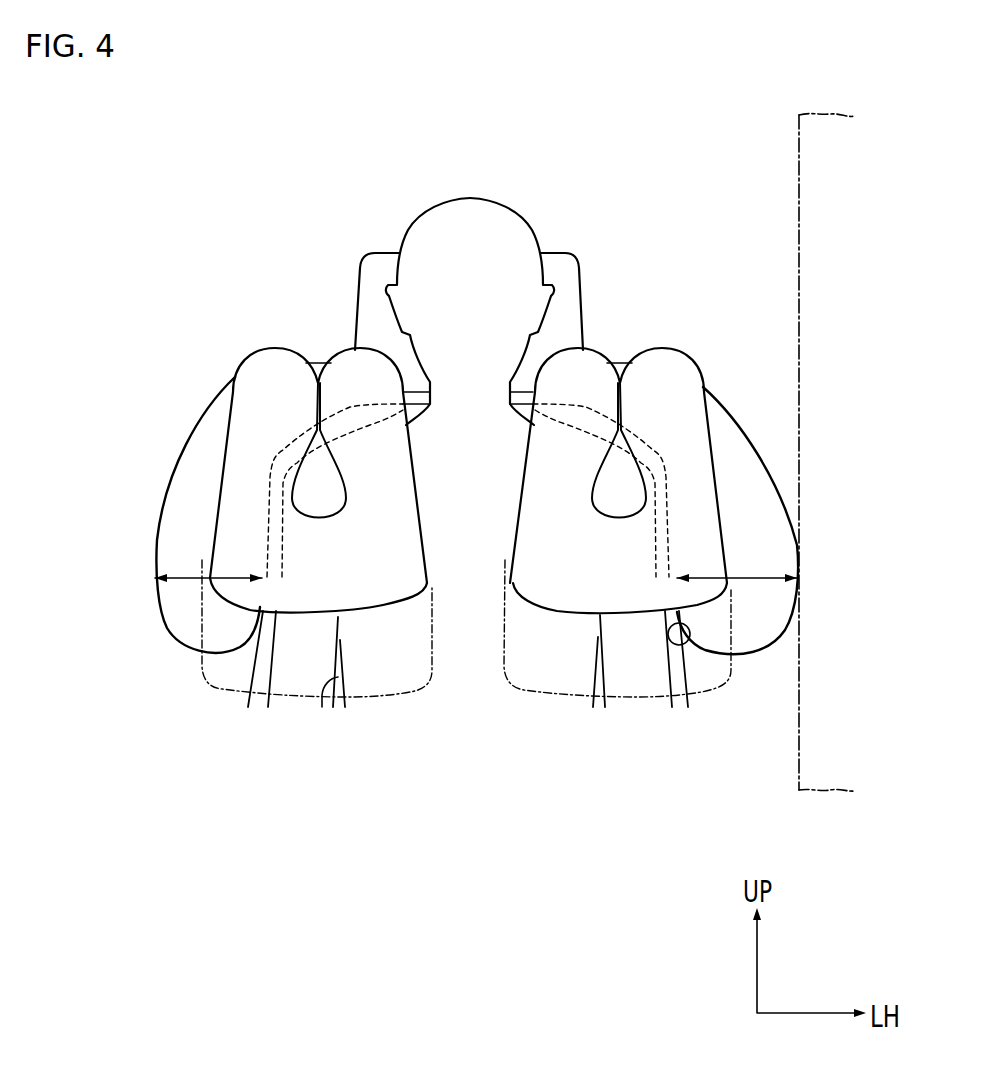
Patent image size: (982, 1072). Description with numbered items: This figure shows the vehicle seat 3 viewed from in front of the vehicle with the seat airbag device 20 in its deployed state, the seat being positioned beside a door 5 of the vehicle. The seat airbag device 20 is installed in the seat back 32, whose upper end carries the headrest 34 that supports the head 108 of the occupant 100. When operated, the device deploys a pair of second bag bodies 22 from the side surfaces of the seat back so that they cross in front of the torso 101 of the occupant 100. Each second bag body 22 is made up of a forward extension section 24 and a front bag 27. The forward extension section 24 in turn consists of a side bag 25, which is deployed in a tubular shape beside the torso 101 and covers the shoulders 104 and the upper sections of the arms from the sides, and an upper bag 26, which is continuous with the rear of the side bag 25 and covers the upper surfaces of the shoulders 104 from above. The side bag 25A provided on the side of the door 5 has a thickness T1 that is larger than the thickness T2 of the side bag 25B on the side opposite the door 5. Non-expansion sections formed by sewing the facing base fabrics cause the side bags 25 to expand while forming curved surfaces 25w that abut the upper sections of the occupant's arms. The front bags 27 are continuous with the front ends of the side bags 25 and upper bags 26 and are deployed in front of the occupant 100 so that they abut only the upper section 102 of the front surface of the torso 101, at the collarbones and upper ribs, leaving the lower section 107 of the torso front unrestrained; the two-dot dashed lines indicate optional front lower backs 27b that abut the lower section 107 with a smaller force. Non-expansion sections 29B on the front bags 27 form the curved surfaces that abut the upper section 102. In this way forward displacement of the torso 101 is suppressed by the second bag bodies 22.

The vehicle seat 3 is at (500, 265).
The door 5 is at (795, 196).
The seat airbag device 20 is at (475, 569).
The second bag bodies 22 is at (235, 376).
The forward extension section 24 is at (475, 569).
The side bag 25 is at (475, 618).
The side bag on the door side 25A is at (751, 623).
The side bag on the side opposite the door 25B is at (190, 578).
The curved surface 25w is at (690, 641).
The upper bag 26 is at (341, 349).
The front bag 27 is at (368, 603).
The front lower back 27b is at (392, 693).
The non-expansion section 29B is at (317, 500).
The seat back 32 is at (687, 672).
The headrest 34 is at (551, 262).
The occupant 100 is at (471, 469).
The torso 101 is at (322, 707).
The upper section of front surface of torso 102 is at (471, 478).
The shoulders 104 is at (297, 463).
The lower section of front surface of torso 107 is at (458, 633).
The head 108 is at (469, 196).
The thickness of side bag on the door side T1 is at (757, 577).
The thickness of side bag on the opposite side T2 is at (177, 577).